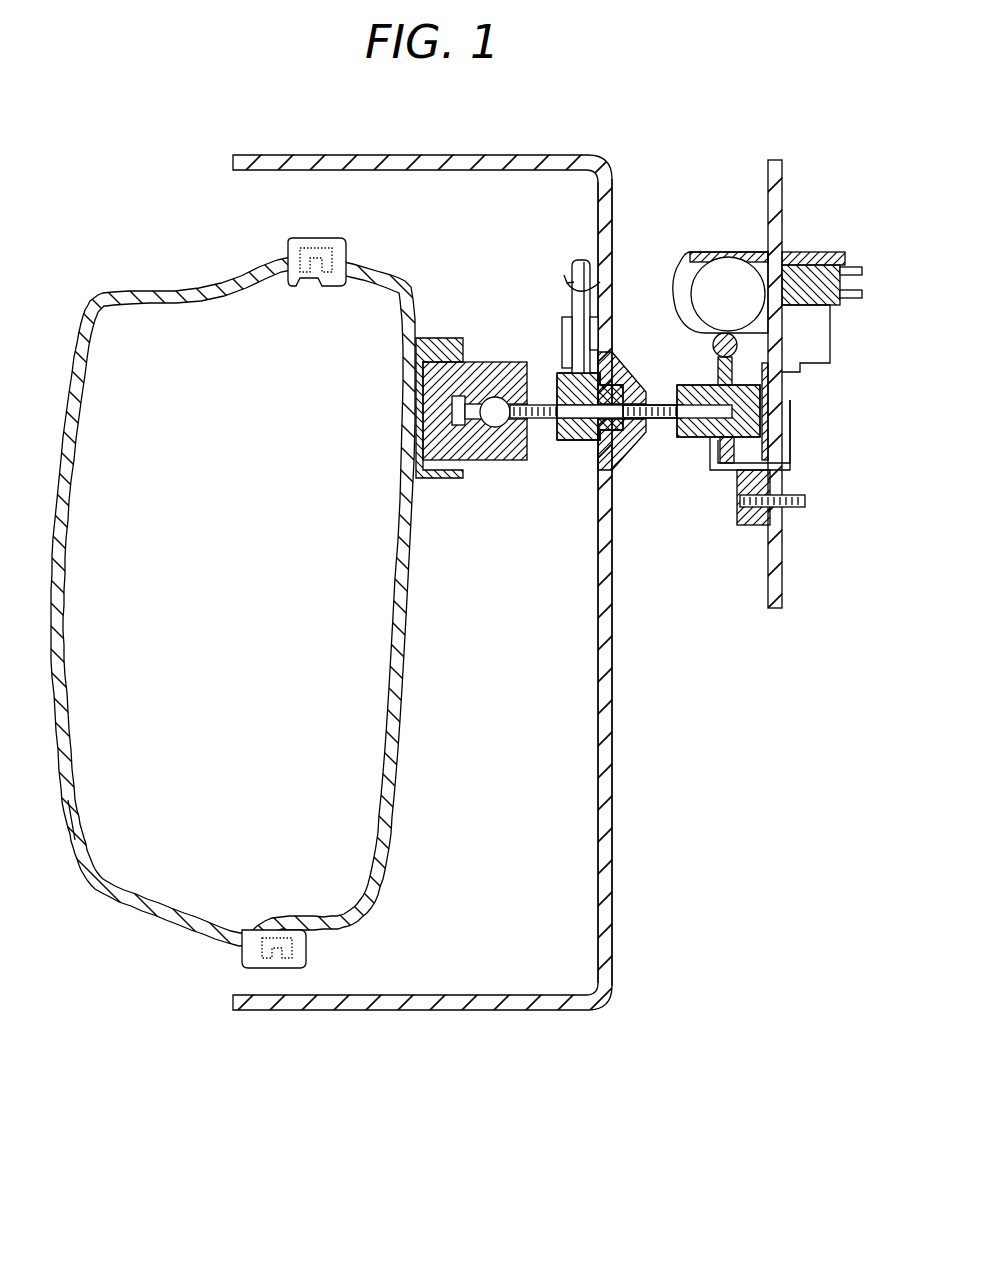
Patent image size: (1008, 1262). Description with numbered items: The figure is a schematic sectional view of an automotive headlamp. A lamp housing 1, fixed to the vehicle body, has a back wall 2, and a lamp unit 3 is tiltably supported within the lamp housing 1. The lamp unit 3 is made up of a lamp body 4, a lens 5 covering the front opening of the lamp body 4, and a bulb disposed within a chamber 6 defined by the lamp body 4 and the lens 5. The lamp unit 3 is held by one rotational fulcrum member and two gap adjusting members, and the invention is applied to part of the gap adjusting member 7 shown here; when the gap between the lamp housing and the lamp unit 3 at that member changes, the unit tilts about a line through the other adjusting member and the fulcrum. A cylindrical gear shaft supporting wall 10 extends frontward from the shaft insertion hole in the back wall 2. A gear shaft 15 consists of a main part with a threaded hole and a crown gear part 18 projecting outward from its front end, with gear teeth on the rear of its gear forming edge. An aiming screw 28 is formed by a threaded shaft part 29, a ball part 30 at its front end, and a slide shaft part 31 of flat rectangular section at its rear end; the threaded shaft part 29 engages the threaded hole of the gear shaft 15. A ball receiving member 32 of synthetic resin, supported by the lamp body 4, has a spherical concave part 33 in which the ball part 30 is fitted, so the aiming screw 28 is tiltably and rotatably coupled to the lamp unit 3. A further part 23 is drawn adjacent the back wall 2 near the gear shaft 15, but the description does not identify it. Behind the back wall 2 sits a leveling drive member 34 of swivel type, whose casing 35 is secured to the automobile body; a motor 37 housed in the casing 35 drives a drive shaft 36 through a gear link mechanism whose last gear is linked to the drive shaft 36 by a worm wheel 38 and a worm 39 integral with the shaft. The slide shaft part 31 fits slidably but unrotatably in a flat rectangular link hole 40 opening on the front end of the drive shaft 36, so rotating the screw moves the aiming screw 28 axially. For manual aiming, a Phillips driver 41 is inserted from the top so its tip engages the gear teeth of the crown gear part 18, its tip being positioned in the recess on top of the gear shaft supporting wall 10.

The lamp housing 1 is at (492, 1010).
The back wall 2 is at (612, 820).
The lamp unit 3 is at (85, 880).
The lamp body 4 is at (400, 757).
The lens 5 is at (125, 290).
The chamber 6 is at (262, 678).
The gap adjusting member 7 is at (500, 307).
The gear shaft supporting wall 10 is at (582, 462).
The gear shaft 15 is at (650, 436).
The crown gear part 18 is at (548, 420).
The support flange 23 is at (623, 380).
The aiming screw 28 is at (536, 375).
The threaded shaft part 29 is at (500, 460).
The ball part 30 is at (480, 412).
The slide shaft part 31 is at (702, 440).
The ball receiving member 32 is at (463, 336).
The spherical concave part 33 is at (490, 430).
The leveling drive member 34 is at (695, 252).
The casing 35 is at (780, 458).
The drive shaft 36 is at (805, 388).
The motor 37 is at (776, 236).
The worm wheel 38 is at (740, 510).
The worm 39 is at (740, 345).
The link hole 40 is at (690, 385).
The Phillips driver 41 is at (571, 262).